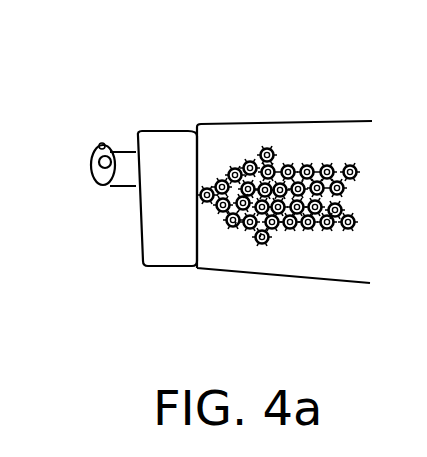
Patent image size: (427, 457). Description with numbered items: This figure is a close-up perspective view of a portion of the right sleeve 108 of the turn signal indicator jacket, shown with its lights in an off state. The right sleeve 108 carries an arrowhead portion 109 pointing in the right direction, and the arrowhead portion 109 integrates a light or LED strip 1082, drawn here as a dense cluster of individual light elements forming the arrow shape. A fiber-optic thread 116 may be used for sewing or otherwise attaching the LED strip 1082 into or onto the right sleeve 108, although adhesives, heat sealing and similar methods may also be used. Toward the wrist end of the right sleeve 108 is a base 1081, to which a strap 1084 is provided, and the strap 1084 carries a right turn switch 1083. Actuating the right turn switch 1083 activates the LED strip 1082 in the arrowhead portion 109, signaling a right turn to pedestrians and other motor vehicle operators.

The right sleeve 108 is at (308, 133).
The base 1081 is at (180, 148).
The LED strip 1082 is at (260, 237).
The right turn switch 1083 is at (99, 187).
The strap 1084 is at (123, 172).
The arrowhead portion 109 is at (342, 150).
The fiber-optic thread 116 is at (235, 226).